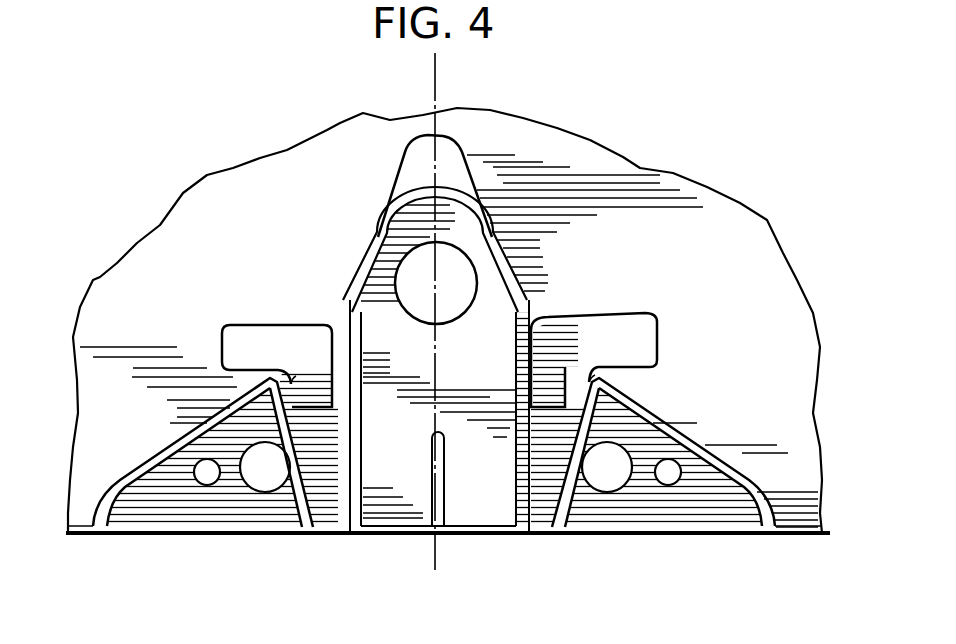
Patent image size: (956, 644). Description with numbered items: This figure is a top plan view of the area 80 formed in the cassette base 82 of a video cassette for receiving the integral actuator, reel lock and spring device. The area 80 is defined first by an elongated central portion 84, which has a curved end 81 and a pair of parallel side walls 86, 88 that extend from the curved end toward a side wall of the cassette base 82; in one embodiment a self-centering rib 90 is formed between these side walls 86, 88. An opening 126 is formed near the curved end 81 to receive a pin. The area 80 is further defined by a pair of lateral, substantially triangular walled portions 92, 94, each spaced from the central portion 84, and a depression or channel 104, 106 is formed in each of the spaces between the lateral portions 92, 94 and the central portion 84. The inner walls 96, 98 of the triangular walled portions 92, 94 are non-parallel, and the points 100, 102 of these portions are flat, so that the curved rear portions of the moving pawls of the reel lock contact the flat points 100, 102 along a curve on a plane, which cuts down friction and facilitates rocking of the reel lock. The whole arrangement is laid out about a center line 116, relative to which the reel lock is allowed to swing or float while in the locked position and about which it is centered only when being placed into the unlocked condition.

The area 80 is at (525, 148).
The curved end 81 is at (414, 168).
The cassette base 82 is at (752, 248).
The central portion 84 is at (372, 246).
The side wall 86 is at (363, 442).
The side wall 88 is at (518, 328).
The self-centering rib 90 is at (445, 478).
The triangular walled portion 92 is at (167, 467).
The triangular walled portion 94 is at (680, 440).
The inner wall 96 is at (307, 488).
The inner wall 98 is at (547, 530).
The point 100 is at (291, 386).
The point 102 is at (600, 390).
The channel 104 is at (237, 327).
The channel 106 is at (621, 313).
The center line 116 is at (437, 76).
The opening 126 is at (403, 293).